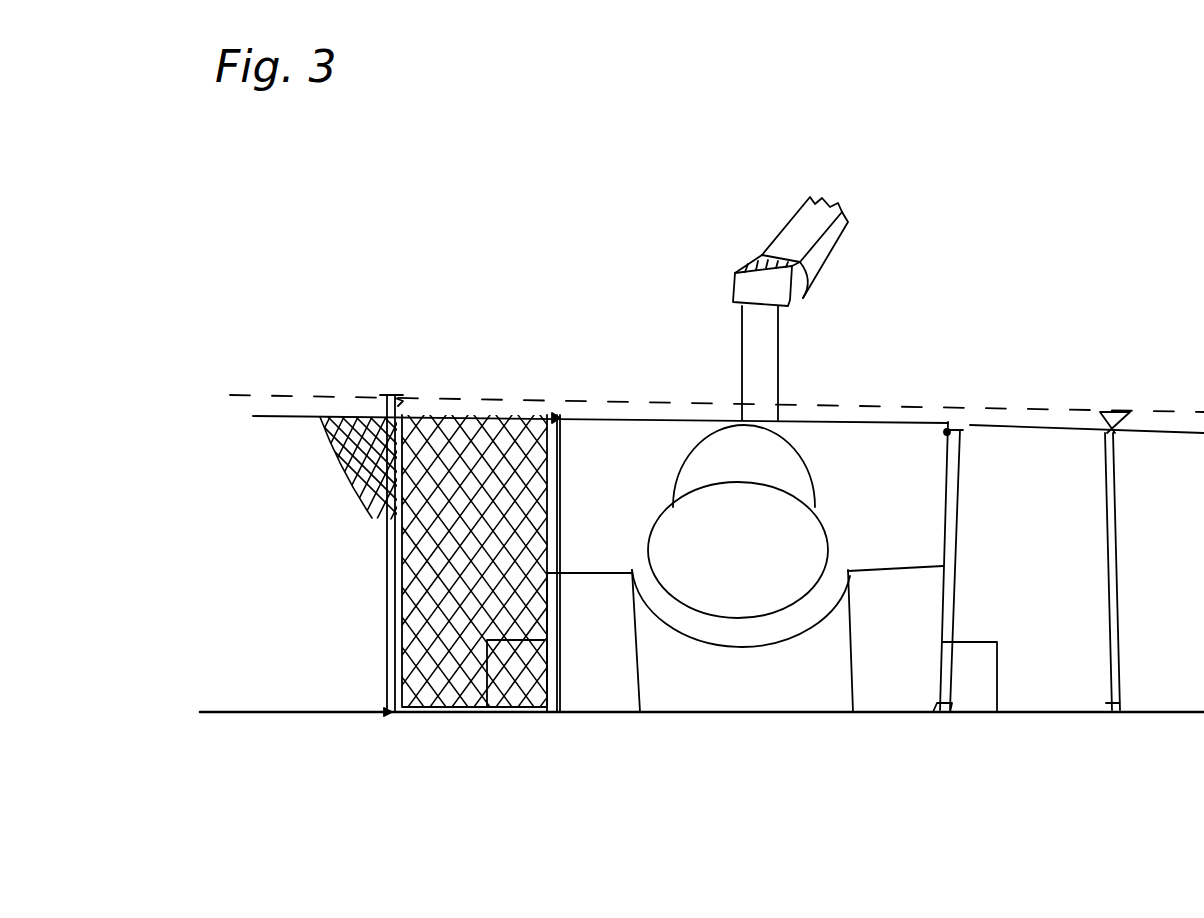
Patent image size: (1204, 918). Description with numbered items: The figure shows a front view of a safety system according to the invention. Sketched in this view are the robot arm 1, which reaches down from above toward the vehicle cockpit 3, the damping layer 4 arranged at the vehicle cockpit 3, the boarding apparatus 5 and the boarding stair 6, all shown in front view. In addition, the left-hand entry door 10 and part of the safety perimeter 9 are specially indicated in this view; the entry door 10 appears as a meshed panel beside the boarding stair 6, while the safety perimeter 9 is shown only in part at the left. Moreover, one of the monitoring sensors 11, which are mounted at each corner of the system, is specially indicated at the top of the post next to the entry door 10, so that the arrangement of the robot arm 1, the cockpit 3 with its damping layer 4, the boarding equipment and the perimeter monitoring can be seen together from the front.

The robot arm 1 is at (820, 257).
The vehicle cockpit 3 is at (780, 558).
The damping layer 4 is at (785, 623).
The boarding apparatus 5 is at (703, 677).
The boarding stair 6 is at (598, 647).
The safety perimeter 9 is at (373, 518).
The left-hand entry door 10 is at (475, 707).
The monitoring sensor 11 is at (392, 390).